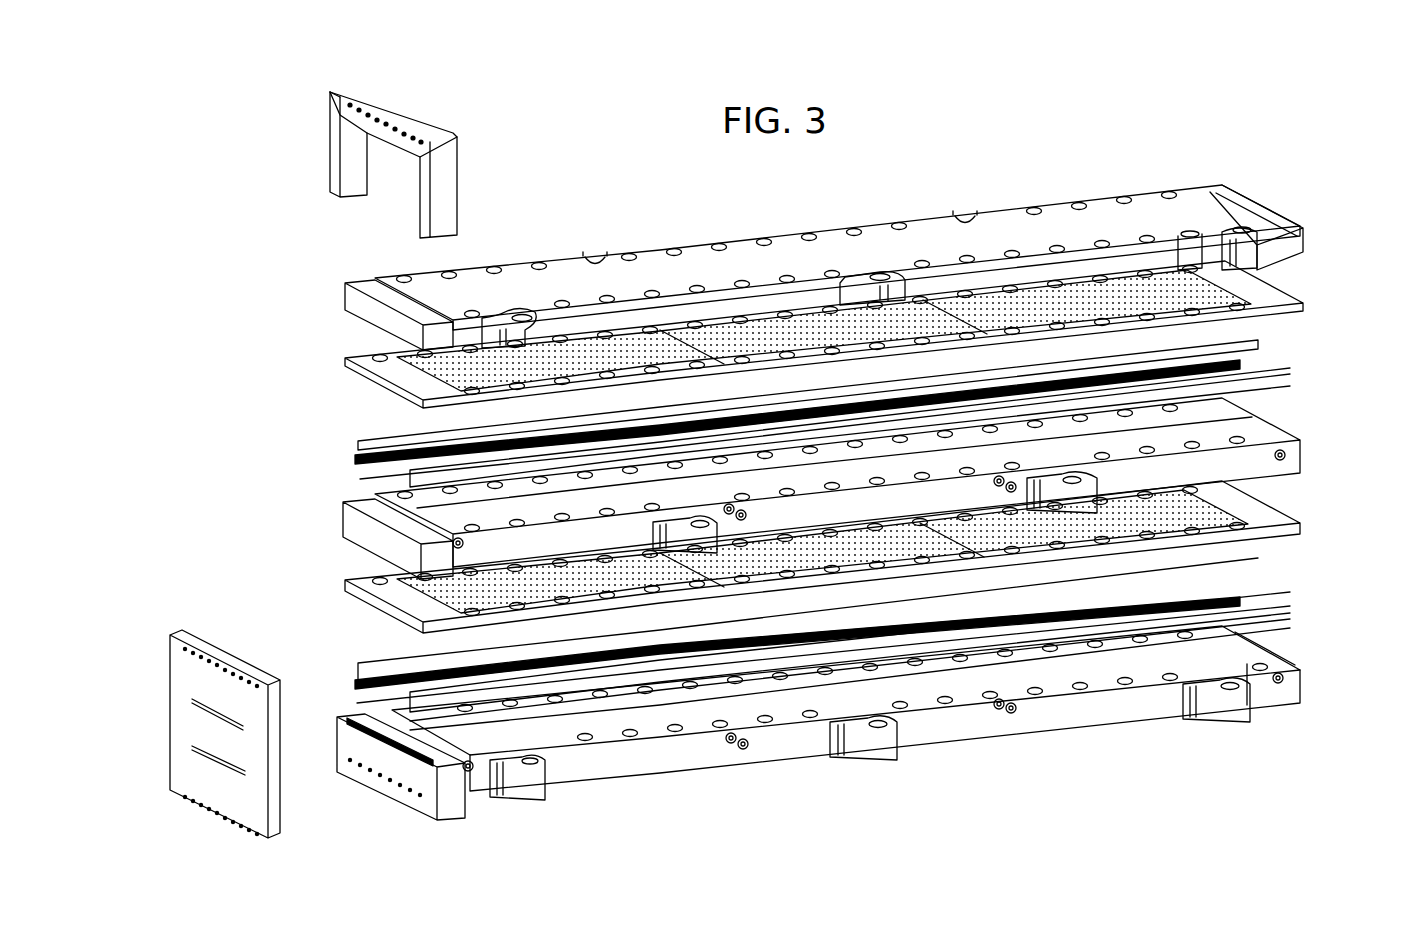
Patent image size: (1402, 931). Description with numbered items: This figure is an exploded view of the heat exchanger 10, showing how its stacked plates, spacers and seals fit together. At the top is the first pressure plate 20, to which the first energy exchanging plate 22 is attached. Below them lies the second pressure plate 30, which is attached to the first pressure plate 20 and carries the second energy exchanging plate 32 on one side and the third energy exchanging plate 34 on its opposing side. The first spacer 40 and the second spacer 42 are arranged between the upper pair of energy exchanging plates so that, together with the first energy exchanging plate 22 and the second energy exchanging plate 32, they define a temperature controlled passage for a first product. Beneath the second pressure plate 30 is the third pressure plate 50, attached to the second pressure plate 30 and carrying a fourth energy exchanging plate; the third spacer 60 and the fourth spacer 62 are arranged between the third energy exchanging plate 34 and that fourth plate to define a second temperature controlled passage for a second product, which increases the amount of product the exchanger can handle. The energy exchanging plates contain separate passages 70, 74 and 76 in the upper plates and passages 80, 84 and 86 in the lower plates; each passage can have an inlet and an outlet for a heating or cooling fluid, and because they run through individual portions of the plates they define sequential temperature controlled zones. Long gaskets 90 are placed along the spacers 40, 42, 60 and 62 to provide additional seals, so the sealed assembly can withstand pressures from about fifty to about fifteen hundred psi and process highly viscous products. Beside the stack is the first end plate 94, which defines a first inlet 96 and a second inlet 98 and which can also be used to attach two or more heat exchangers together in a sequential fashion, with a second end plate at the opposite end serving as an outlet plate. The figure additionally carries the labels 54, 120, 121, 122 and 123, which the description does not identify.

The heat exchanger 10 is at (1137, 143).
The first pressure plate 20 is at (1025, 240).
The first energy exchanging plate 22 is at (1300, 312).
The second pressure plate 30 is at (1285, 470).
The second energy exchanging plate 32 is at (1290, 392).
The third energy exchanging plate 34 is at (1300, 530).
The first spacer 40 is at (358, 443).
The second spacer 42 is at (1292, 378).
The third pressure plate 50 is at (818, 719).
The base plate side wall 54 is at (940, 712).
The third spacer 60 is at (358, 667).
The fourth spacer 62 is at (1293, 600).
The passage 70 is at (455, 548).
The passage 74 is at (742, 522).
The passage 76 is at (1013, 494).
The passage 80 is at (470, 775).
The passage 84 is at (745, 750).
The passage 86 is at (1015, 712).
The long gasket 90 is at (1265, 362).
The first end plate 94 is at (194, 712).
The first inlet 96 is at (205, 705).
The second inlet 98 is at (205, 757).
The bracket 120 is at (353, 124).
The bracket first leg 121 is at (312, 135).
The bracket second leg 122 is at (400, 223).
The bracket cross member 123 is at (430, 99).